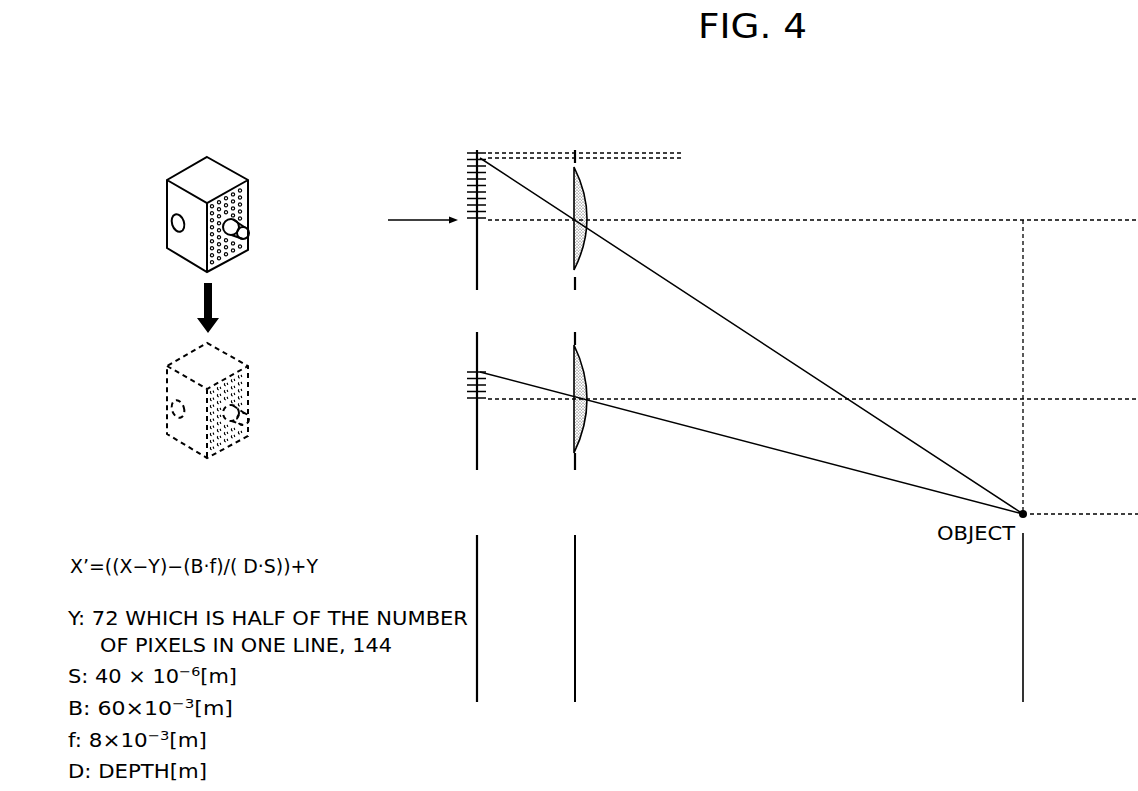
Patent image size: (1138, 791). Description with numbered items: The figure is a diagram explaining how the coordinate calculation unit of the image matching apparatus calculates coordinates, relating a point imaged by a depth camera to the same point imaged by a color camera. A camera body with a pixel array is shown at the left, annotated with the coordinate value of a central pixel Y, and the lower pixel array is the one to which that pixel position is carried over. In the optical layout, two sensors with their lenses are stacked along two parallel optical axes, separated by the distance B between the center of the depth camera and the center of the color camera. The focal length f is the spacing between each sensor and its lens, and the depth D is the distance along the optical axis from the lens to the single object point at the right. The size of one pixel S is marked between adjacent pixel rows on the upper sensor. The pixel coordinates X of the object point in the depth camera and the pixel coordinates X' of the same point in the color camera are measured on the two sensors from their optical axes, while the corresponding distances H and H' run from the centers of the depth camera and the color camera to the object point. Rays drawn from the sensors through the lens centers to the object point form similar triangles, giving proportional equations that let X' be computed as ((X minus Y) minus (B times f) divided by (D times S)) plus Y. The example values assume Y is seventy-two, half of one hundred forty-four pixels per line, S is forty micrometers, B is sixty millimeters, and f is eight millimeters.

The coordinate value of a central pixel Y is at (273, 296).
The size of one pixel S is at (667, 130).
The pixel coordinates of the point of the object in the depth camera X is at (457, 186).
The pixel coordinates of the point of the object in the color camera X' is at (457, 385).
The distance between the center of the depth camera and the center of the color came B is at (635, 220).
The distance in the vertical direction from the center of the depth camera to the on H is at (1105, 367).
The distance in the horizontal direction from the center of the color camera to the H' is at (1075, 456).
The focal length of the depth camera f is at (575, 632).
The depth of any one point of the object D is at (575, 632).